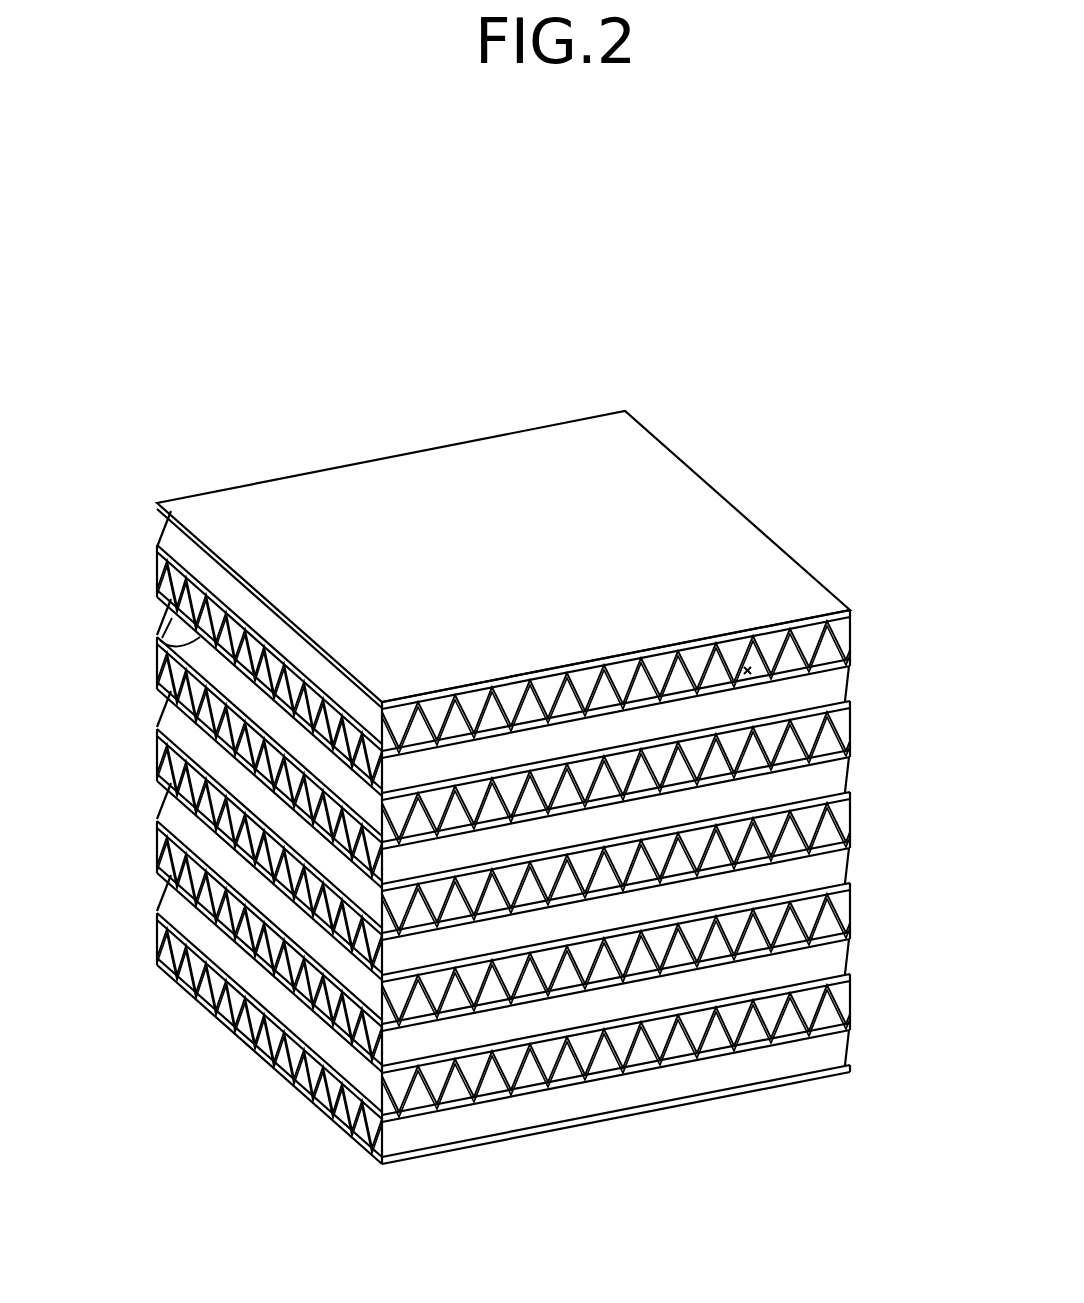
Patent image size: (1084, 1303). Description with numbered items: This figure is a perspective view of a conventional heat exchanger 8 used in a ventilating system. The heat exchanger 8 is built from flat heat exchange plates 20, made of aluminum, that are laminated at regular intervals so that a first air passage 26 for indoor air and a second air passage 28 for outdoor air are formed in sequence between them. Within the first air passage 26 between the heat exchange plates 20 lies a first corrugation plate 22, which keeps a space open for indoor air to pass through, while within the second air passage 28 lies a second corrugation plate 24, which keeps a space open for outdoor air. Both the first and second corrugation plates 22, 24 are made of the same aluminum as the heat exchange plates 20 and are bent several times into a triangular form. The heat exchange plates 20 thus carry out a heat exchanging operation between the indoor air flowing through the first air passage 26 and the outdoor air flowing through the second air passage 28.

The heat exchanger 8 is at (606, 362).
The heat exchange plate 20 is at (727, 532).
The first corrugation plate 22 is at (840, 640).
The second corrugation plate 24 is at (160, 581).
The first air passage 26 is at (748, 673).
The second air passage 28 is at (160, 640).